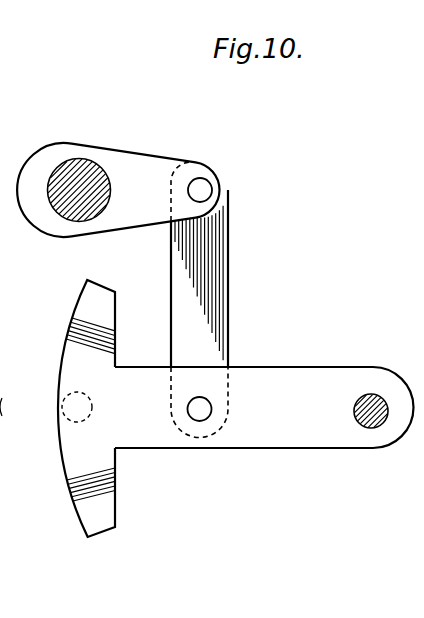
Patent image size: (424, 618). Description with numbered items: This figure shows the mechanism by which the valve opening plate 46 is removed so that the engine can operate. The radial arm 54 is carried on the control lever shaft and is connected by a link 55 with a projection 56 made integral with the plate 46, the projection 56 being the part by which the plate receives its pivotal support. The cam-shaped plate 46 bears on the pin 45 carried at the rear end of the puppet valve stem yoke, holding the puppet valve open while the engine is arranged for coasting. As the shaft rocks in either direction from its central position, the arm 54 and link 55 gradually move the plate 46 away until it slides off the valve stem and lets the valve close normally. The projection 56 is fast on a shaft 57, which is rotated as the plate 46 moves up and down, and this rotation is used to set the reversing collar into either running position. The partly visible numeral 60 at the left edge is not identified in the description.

The pin 45 is at (67, 423).
The valve opening plate 46 is at (70, 364).
The radial arm 54 is at (137, 168).
The link 55 is at (216, 308).
The projection 56 is at (276, 380).
The shaft 57 is at (373, 420).
The shaft 60 is at (62, 190).